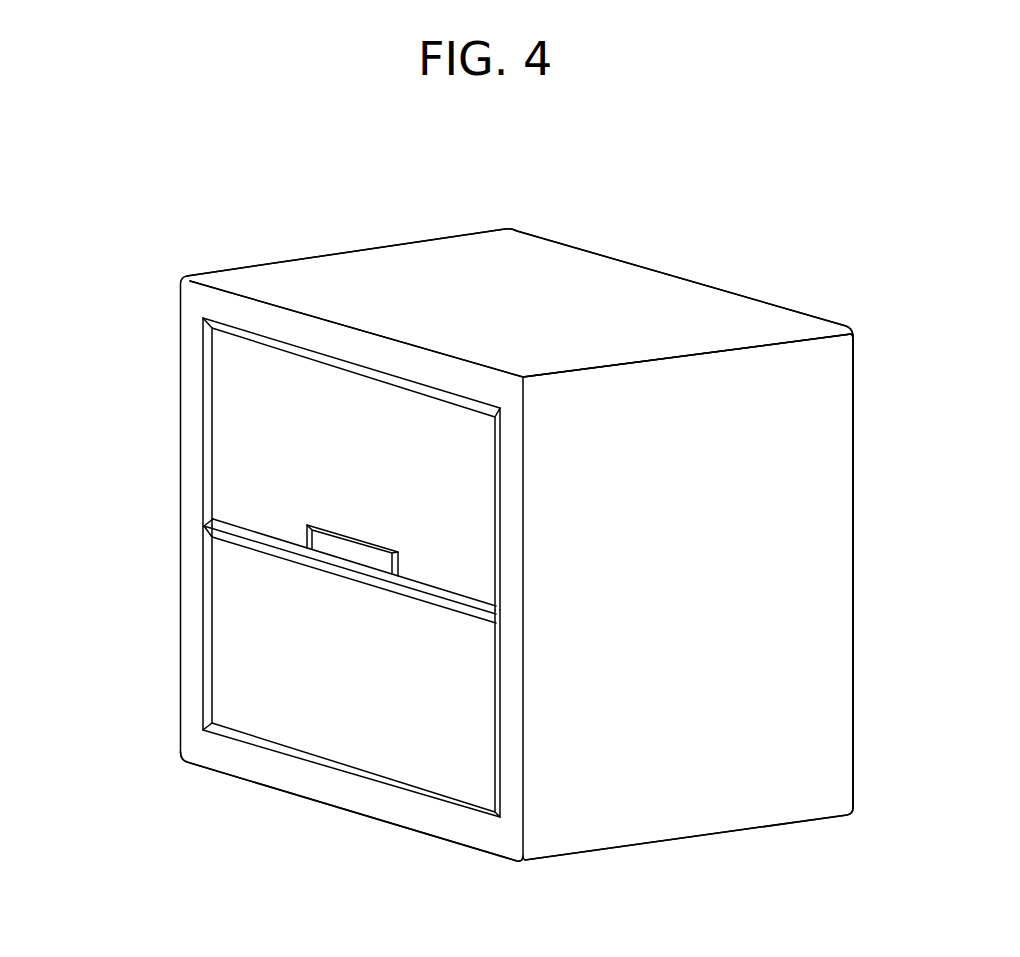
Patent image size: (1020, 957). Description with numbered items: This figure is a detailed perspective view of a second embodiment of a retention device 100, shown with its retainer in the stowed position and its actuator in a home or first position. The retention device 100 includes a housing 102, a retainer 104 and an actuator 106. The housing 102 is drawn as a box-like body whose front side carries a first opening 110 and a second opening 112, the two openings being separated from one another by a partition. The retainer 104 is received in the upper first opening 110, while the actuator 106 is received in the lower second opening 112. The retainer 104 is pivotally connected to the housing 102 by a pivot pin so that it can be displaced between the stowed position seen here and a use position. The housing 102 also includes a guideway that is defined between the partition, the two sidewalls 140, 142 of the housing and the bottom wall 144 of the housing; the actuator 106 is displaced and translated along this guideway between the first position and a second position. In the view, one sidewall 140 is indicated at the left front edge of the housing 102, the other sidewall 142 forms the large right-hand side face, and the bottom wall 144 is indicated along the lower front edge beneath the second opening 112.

The retention device 100 is at (690, 226).
The housing 102 is at (853, 560).
The retainer 104 is at (252, 436).
The actuator 106 is at (282, 703).
The first opening 110 is at (202, 407).
The second opening 112 is at (202, 666).
The sidewall 140 is at (180, 574).
The sidewall 142 is at (685, 737).
The bottom wall 144 is at (337, 808).